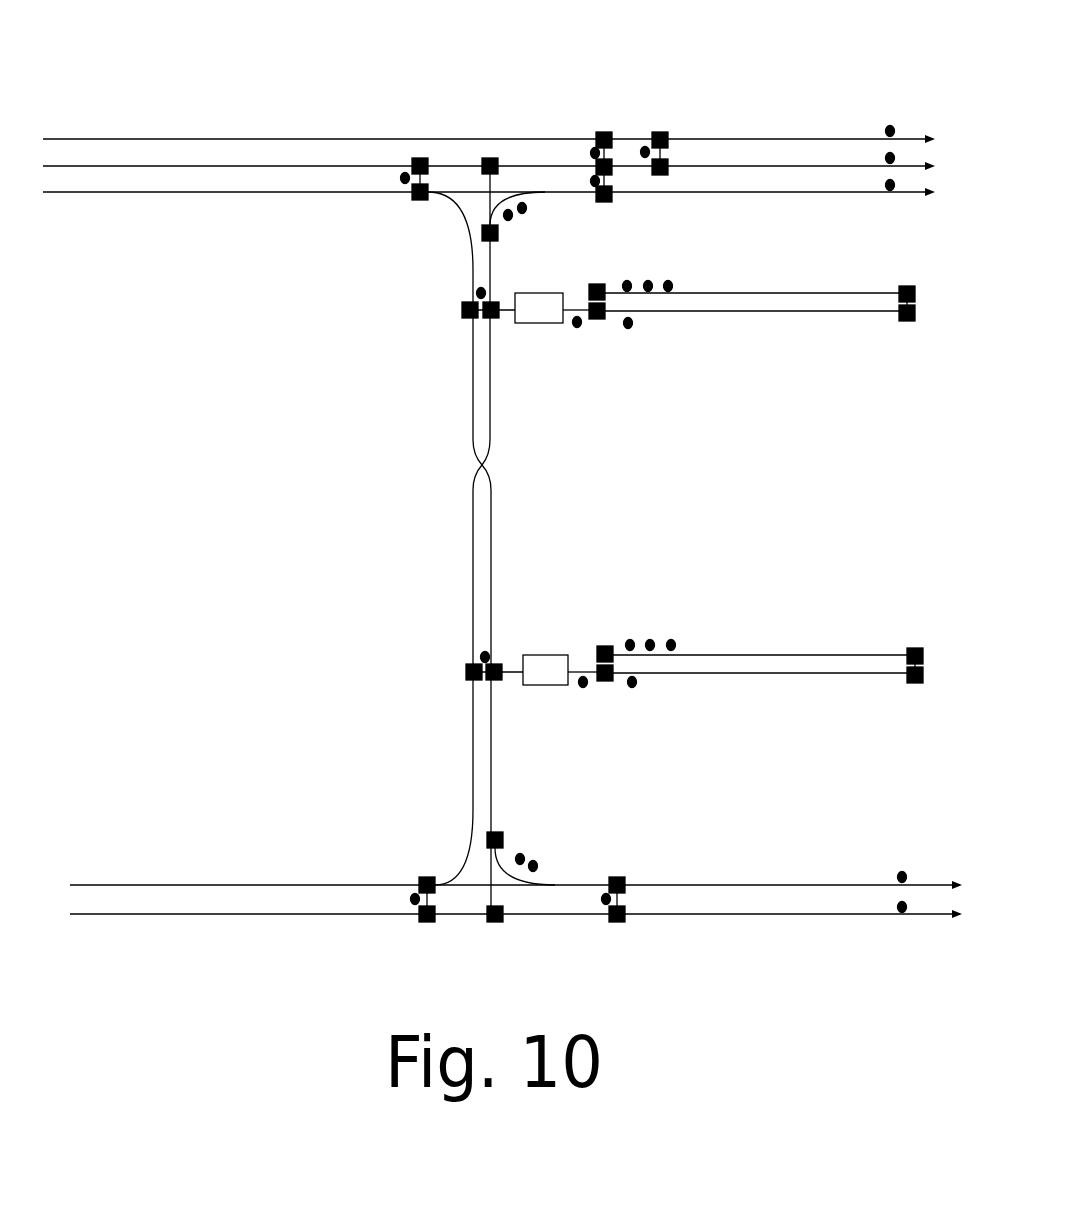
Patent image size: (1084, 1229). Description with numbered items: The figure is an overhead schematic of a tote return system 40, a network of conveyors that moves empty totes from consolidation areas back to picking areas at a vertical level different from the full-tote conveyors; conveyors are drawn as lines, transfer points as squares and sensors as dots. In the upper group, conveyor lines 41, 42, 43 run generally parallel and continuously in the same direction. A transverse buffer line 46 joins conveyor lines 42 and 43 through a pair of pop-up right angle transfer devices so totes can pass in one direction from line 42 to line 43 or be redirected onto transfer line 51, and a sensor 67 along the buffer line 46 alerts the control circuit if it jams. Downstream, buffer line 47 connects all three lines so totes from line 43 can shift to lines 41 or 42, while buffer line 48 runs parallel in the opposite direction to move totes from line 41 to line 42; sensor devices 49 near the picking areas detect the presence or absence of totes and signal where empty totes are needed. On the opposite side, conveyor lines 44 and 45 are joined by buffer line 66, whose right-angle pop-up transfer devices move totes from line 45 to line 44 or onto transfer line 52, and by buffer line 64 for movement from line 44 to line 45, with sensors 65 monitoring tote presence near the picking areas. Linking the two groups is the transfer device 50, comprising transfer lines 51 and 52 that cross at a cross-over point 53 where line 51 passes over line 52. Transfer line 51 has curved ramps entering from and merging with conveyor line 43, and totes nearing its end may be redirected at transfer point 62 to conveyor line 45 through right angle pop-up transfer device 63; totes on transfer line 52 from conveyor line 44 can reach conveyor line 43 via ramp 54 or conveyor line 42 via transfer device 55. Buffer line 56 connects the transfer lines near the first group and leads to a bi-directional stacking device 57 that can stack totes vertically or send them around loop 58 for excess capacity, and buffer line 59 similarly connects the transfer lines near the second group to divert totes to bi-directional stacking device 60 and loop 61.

The system 40 is at (422, 44).
The conveyor line 41 is at (135, 137).
The conveyor line 42 is at (205, 164).
The conveyor line 43 is at (245, 193).
The conveyor line 44 is at (182, 884).
The conveyor line 45 is at (182, 915).
The transverse buffer line 46 is at (420, 206).
The buffer line 47 is at (601, 129).
The buffer line 48 is at (661, 128).
The sensor devices 49 is at (889, 120).
The transfer device 50 is at (435, 398).
The transfer line 51 is at (472, 405).
The transfer line 52 is at (492, 425).
The cross-over point 53 is at (493, 462).
The ramp 54 is at (530, 217).
The transfer device 55 is at (499, 163).
The buffer line 56 is at (464, 318).
The bi-directional stacking device 57 is at (540, 324).
The loop 58 is at (768, 288).
The buffer line 59 is at (468, 680).
The bi-directional stacking device 60 is at (545, 686).
The loop 61 is at (764, 630).
The transfer point 62 is at (504, 840).
The right angle pop-up transfer device 63 is at (496, 924).
The buffer line 64 is at (622, 866).
The sensors 65 is at (900, 857).
The buffer line 66 is at (424, 860).
The sensor 67 is at (405, 185).